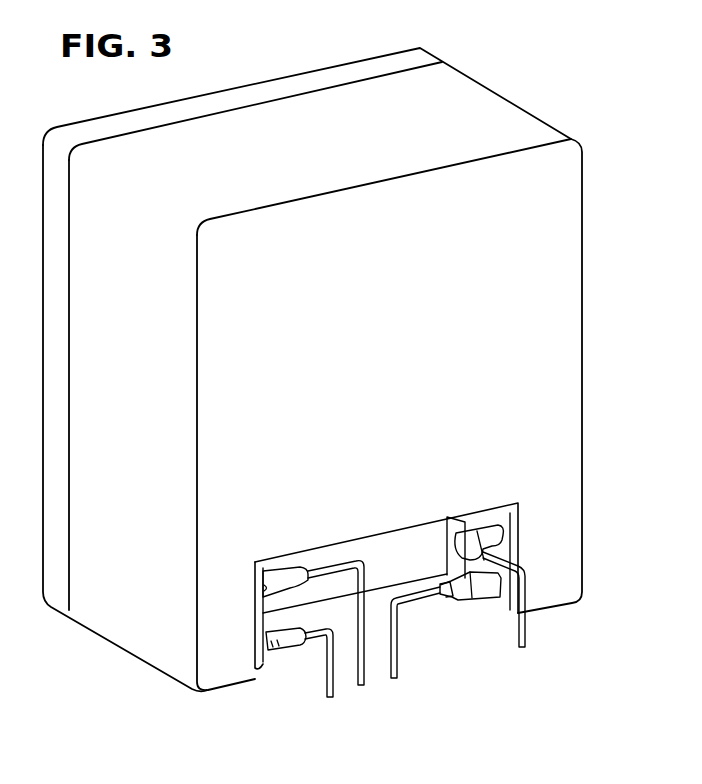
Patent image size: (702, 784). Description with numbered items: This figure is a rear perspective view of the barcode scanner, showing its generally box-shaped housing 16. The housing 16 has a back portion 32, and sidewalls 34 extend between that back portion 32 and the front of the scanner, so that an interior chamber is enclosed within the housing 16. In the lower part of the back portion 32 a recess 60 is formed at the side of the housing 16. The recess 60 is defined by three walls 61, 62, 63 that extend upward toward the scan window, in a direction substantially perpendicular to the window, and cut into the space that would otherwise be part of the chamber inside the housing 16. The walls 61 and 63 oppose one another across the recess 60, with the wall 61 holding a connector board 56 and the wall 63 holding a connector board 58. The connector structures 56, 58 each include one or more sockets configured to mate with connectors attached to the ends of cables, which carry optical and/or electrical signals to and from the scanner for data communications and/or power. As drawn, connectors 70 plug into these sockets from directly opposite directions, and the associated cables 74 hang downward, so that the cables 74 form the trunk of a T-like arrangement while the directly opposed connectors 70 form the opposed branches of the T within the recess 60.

The housing 16 is at (582, 190).
The sidewalls 34 is at (468, 103).
The back portion 32 is at (508, 318).
The wall 62 is at (343, 548).
The wall 63 is at (485, 520).
The connector structure 56 is at (264, 668).
The wall 61 is at (253, 620).
The cables 74 is at (363, 687).
The connectors 70 is at (298, 650).
The connector structure 58 is at (503, 607).
The recess 60 is at (438, 628).